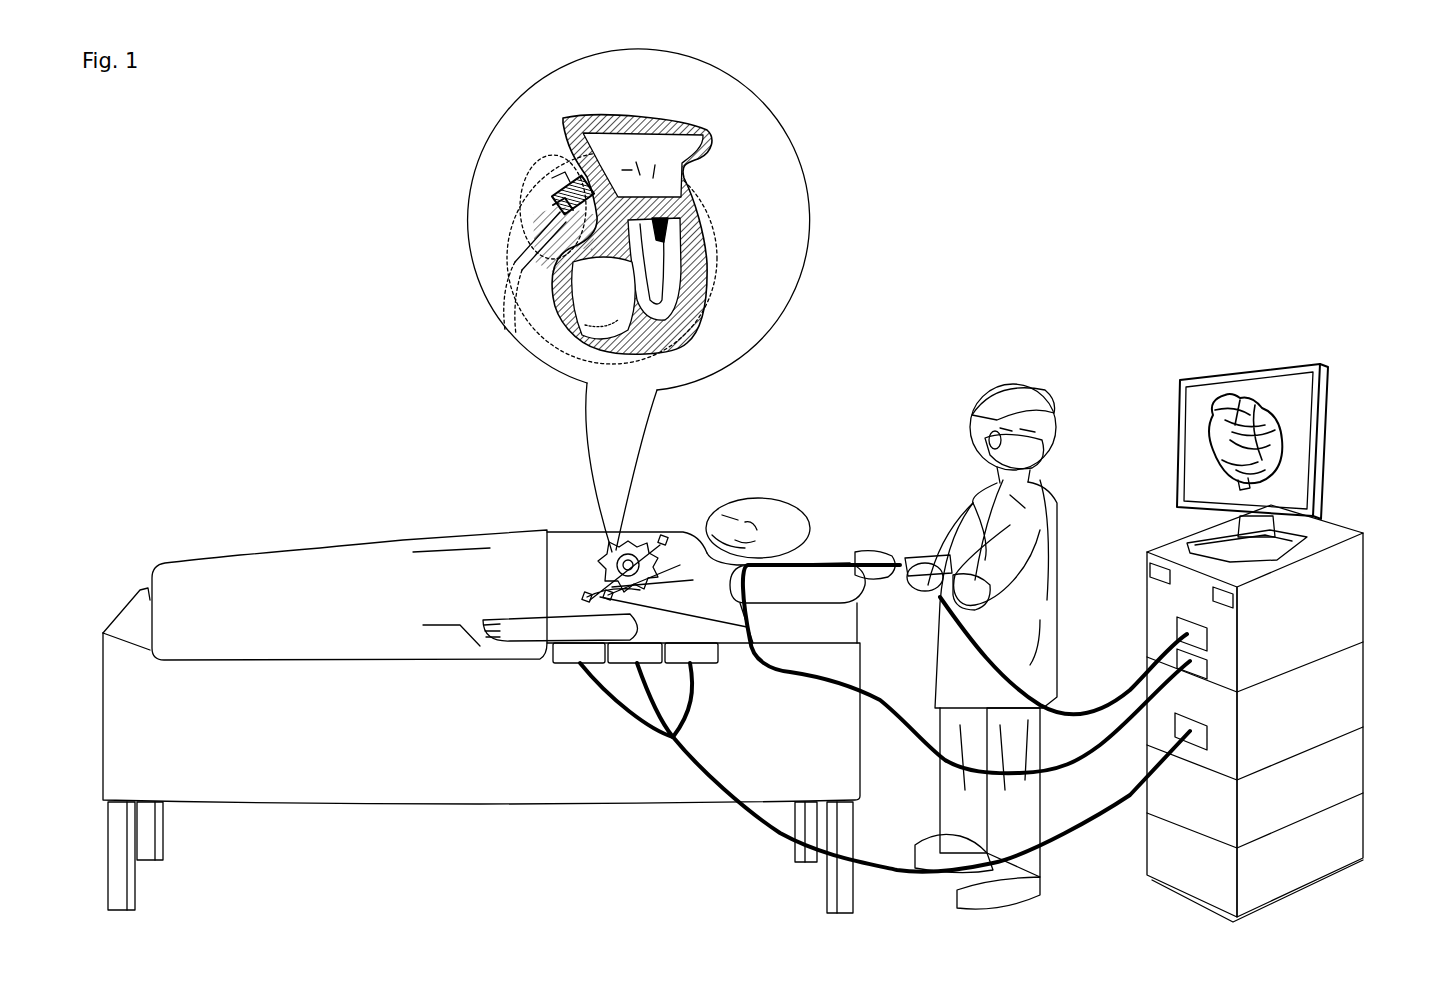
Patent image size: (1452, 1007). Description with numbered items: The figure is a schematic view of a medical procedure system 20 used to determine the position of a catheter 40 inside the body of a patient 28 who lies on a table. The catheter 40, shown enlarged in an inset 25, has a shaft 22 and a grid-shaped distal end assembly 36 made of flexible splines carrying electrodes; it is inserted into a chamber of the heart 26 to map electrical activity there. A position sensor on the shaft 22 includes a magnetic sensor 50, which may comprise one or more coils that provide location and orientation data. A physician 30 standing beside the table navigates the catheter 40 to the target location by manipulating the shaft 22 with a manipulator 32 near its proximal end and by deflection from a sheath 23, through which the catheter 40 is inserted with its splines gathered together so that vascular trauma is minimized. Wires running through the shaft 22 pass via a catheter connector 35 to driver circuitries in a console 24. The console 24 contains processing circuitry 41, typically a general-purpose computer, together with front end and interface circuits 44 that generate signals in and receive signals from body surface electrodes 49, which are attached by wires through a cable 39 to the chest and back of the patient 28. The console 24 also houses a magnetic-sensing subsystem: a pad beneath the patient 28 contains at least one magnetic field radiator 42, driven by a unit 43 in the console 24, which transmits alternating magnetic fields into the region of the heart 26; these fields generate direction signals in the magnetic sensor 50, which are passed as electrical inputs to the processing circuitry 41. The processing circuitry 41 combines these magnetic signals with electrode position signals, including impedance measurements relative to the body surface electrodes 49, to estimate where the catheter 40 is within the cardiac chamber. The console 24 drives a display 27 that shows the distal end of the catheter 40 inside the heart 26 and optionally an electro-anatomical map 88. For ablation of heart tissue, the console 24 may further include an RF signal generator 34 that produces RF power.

The medical procedure system 20 is at (1203, 209).
The shaft 22 is at (553, 223).
The sheath 23 is at (847, 550).
The console 24 is at (1400, 369).
The inset 25 is at (465, 194).
The heart 26 is at (610, 550).
The display 27 is at (1340, 393).
The patient 28 is at (793, 497).
The physician 30 is at (1040, 385).
The manipulator 32 is at (920, 550).
The RF signal generator 34 is at (1368, 582).
The catheter connector 35 is at (1173, 640).
The grid-shaped distal end assembly 36 is at (558, 177).
The cable 39 is at (900, 728).
The catheter 40 is at (557, 190).
The processing circuitry 41 is at (1365, 752).
The magnetic field radiator 42 is at (565, 665).
The unit 43 is at (1365, 673).
The interface circuits 44 is at (1143, 600).
The body surface electrodes 49 is at (668, 535).
The magnetic sensor 50 is at (550, 203).
The electro-anatomical map 88 is at (1258, 372).